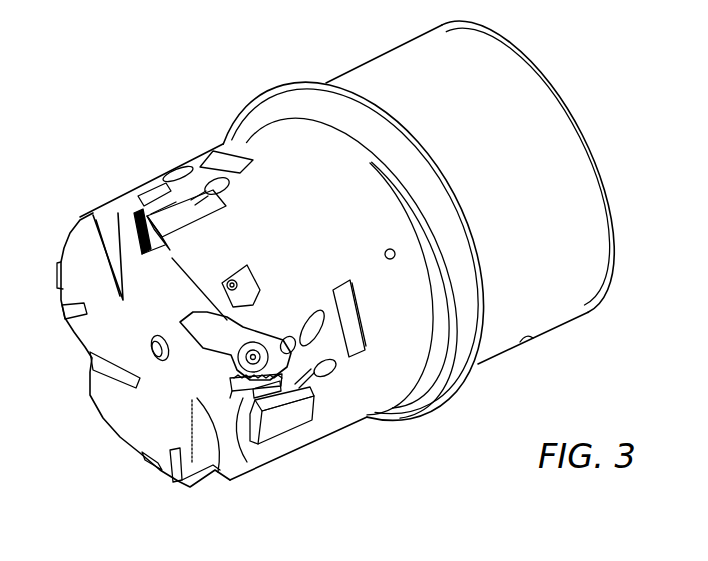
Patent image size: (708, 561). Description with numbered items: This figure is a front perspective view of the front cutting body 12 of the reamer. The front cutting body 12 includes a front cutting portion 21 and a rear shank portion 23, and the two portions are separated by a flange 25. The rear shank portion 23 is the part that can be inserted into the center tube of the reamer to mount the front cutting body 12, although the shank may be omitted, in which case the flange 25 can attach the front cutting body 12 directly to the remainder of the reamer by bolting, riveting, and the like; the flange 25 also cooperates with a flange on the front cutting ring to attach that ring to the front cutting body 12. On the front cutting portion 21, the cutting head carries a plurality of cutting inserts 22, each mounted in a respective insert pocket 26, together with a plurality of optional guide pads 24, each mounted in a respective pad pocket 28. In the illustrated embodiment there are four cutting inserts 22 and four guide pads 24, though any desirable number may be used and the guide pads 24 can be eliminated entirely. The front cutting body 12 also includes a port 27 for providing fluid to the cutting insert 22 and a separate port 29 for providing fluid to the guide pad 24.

The front cutting body 12 is at (134, 63).
The front cutting portion 21 is at (86, 179).
The cutting insert 22 is at (145, 212).
The rear shank portion 23 is at (366, 37).
The guide pad 24 is at (210, 218).
The flange 25 is at (301, 81).
The insert pocket 26 is at (180, 192).
The port 27 is at (176, 168).
The pad pocket 28 is at (203, 236).
The port 29 is at (230, 184).